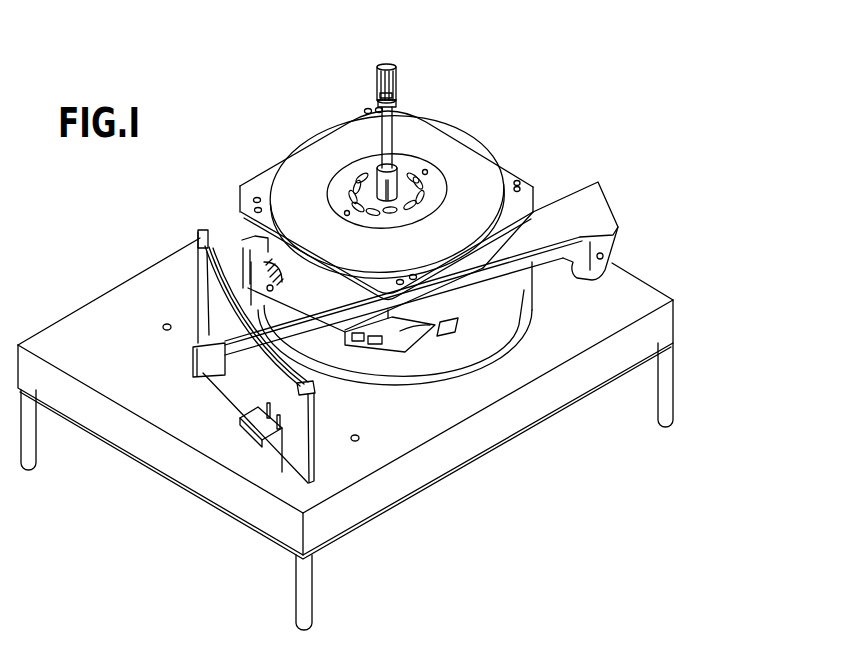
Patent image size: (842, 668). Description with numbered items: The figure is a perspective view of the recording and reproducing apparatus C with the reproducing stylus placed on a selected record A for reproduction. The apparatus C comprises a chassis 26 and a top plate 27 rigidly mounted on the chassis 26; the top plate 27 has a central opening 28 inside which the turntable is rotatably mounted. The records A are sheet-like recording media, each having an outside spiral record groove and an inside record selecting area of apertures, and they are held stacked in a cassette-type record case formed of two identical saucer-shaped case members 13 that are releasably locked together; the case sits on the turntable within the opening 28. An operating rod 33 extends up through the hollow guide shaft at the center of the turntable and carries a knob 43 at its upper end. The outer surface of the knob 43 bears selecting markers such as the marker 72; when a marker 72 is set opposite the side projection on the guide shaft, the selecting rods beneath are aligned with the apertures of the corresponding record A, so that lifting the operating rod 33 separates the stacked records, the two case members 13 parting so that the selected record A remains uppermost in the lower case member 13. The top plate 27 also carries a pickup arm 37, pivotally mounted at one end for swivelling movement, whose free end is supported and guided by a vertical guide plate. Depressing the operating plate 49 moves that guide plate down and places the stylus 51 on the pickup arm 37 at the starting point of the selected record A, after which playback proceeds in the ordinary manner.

The case member 13 is at (280, 155).
The operating rod 33 is at (387, 130).
The knob 43 is at (396, 83).
The marker 72 is at (384, 95).
The pickup arm 37 is at (542, 247).
The stylus 51 is at (447, 280).
The central opening 28 is at (432, 317).
The chassis 26 is at (457, 453).
The top plate 27 is at (382, 448).
The operating plate 49 is at (253, 432).
The record A is at (262, 255).
The recording and reproducing apparatus C is at (380, 591).